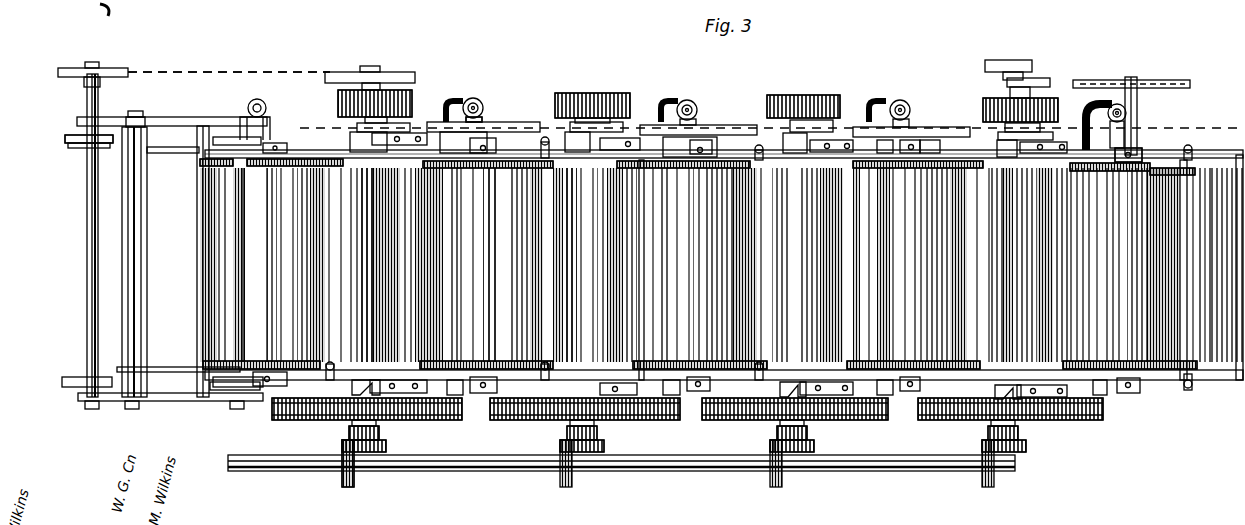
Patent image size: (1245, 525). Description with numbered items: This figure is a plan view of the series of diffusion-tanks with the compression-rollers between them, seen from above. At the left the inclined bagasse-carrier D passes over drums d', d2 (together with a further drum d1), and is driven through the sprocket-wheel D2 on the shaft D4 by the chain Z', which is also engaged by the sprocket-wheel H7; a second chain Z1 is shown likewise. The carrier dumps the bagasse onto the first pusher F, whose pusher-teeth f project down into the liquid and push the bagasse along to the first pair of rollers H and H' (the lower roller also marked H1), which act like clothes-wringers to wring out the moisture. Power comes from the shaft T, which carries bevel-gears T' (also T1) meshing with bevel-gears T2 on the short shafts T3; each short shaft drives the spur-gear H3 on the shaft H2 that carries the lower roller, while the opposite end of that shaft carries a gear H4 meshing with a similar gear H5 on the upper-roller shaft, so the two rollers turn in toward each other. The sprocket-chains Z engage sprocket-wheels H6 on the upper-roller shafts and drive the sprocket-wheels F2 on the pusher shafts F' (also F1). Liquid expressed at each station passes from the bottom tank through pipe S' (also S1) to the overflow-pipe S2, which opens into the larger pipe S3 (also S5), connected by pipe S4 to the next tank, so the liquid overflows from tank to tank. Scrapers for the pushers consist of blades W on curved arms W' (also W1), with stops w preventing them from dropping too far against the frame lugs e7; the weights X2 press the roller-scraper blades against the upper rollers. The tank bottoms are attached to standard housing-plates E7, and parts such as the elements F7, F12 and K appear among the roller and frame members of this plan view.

The bagasse-carrier D is at (165, 397).
The sprocket-wheel D2 is at (118, 68).
The shaft D4 is at (88, 224).
The drum d' is at (90, 215).
The flange d1 is at (98, 117).
The drum d2 is at (213, 142).
The sprocket-chain Z' is at (229, 58).
The line Z1 is at (229, 58).
The sprocket-chain Z is at (740, 125).
The pipe S' is at (1140, 143).
The block S1 is at (1140, 143).
The overflow-pipe S2 is at (258, 98).
The larger pipe S3 is at (262, 100).
The roller bracket S5 is at (499, 101).
The pipe S4 is at (1090, 115).
The upper roller H is at (690, 265).
The lower roller H' is at (328, 265).
The cylinder H1 is at (373, 265).
The shaft H2 is at (350, 385).
The spur-gear H3 is at (1100, 418).
The gear H4 is at (345, 112).
The gear H5 is at (412, 95).
The sprocket-wheel H6 is at (395, 135).
The sprocket-wheel H7 is at (388, 72).
The pusher F is at (696, 265).
The pusher shaft F' is at (450, 265).
The roller F1 is at (472, 265).
The sprocket-wheel F2 is at (1170, 80).
The roller F7 is at (856, 265).
The plate F12 is at (530, 120).
The pusher-teeth f is at (272, 278).
The scraper blade W is at (791, 265).
The curved arms W' is at (705, 265).
The roller W1 is at (518, 265).
The stops w is at (882, 288).
The pin e7 is at (768, 266).
The housing-plate E7 is at (1200, 160).
The weights X2 is at (485, 422).
The roller K is at (754, 265).
The shaft T is at (621, 478).
The bevel-gears T' is at (666, 472).
The bevel gear T1 is at (346, 470).
The bevel-gears T2 is at (372, 455).
The short shafts T3 is at (380, 434).